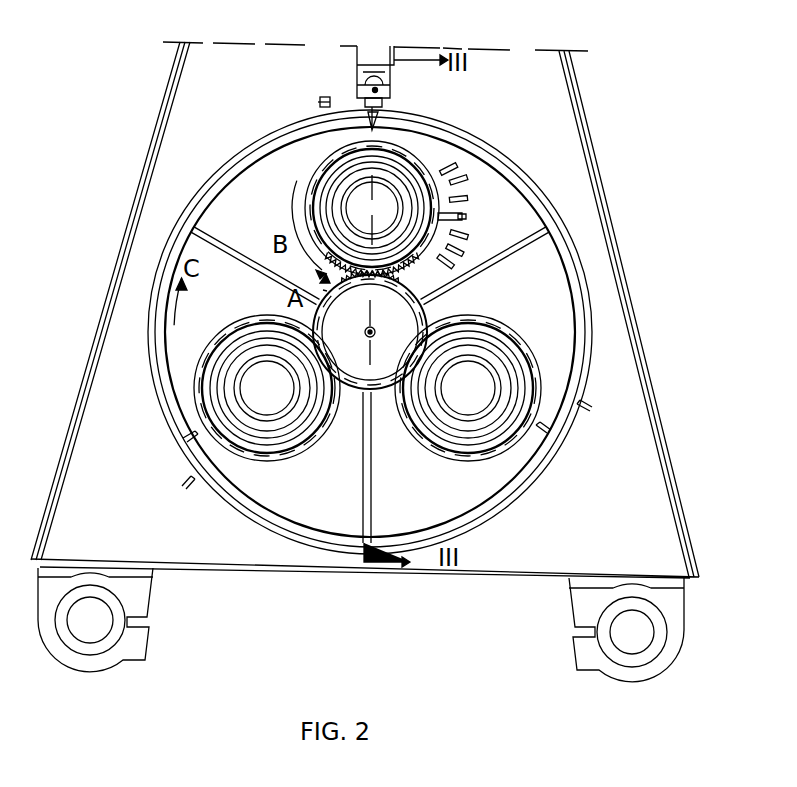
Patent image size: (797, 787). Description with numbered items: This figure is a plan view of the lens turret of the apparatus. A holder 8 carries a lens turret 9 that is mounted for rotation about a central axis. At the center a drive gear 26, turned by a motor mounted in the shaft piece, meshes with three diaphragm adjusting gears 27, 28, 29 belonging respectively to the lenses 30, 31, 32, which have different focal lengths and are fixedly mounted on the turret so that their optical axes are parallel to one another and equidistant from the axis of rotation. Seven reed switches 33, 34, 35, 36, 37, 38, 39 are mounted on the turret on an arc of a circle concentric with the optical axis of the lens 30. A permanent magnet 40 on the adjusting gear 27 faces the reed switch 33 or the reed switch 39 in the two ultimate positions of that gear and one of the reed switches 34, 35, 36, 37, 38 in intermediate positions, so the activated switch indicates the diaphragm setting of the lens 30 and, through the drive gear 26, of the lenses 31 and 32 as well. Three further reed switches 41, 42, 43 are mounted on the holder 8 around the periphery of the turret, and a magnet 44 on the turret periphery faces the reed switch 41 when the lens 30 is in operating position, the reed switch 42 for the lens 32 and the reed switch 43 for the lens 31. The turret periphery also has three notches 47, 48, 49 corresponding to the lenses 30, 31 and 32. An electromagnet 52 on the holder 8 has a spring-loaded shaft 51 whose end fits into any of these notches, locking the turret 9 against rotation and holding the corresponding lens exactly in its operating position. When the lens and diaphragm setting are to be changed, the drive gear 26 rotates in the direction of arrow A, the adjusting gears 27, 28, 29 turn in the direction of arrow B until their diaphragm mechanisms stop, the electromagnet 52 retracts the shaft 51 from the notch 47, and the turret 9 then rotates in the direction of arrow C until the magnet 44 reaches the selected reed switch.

The holder 8 is at (549, 94).
The lens turret 9 is at (392, 525).
The drive gear 26 is at (371, 394).
The diaphragm adjusting gear 27 is at (312, 196).
The diaphragm adjusting gear 28 is at (297, 432).
The diaphragm adjusting gear 29 is at (430, 440).
The lens 30 is at (318, 168).
The lens 31 is at (283, 450).
The lens 32 is at (528, 352).
The reed switch 33 is at (444, 166).
The reed switch 34 is at (470, 176).
The reed switch 35 is at (470, 197).
The reed switch 36 is at (470, 228).
The reed switch 37 is at (470, 237).
The reed switch 38 is at (466, 255).
The reed switch 39 is at (456, 268).
The permanent magnet 40 is at (498, 254).
The reed switch 41 is at (325, 97).
The reed switch 42 is at (592, 408).
The reed switch 43 is at (186, 488).
The magnet 44 is at (318, 102).
The notch 47 is at (386, 118).
The notch 48 is at (185, 438).
The notch 49 is at (547, 433).
The spring-loaded shaft 51 is at (386, 70).
The electromagnet 52 is at (357, 50).